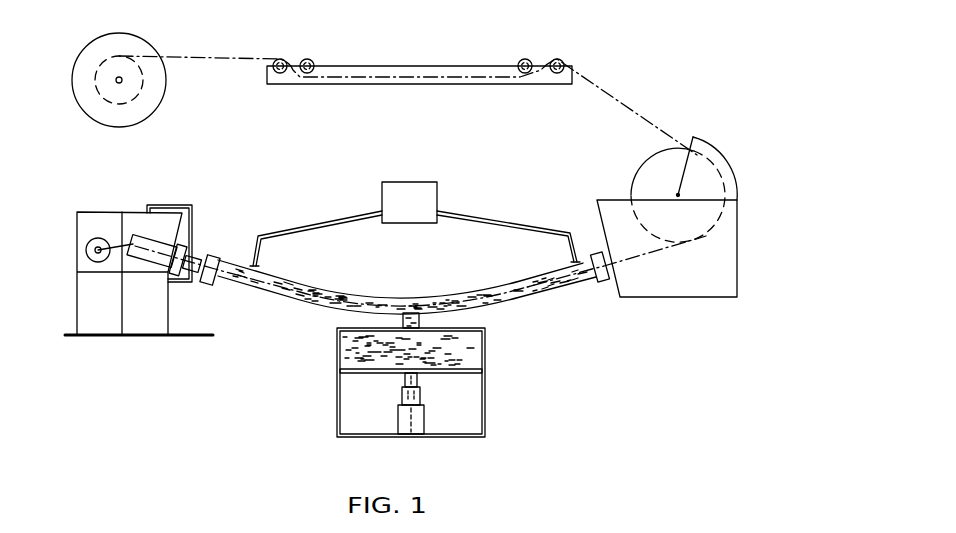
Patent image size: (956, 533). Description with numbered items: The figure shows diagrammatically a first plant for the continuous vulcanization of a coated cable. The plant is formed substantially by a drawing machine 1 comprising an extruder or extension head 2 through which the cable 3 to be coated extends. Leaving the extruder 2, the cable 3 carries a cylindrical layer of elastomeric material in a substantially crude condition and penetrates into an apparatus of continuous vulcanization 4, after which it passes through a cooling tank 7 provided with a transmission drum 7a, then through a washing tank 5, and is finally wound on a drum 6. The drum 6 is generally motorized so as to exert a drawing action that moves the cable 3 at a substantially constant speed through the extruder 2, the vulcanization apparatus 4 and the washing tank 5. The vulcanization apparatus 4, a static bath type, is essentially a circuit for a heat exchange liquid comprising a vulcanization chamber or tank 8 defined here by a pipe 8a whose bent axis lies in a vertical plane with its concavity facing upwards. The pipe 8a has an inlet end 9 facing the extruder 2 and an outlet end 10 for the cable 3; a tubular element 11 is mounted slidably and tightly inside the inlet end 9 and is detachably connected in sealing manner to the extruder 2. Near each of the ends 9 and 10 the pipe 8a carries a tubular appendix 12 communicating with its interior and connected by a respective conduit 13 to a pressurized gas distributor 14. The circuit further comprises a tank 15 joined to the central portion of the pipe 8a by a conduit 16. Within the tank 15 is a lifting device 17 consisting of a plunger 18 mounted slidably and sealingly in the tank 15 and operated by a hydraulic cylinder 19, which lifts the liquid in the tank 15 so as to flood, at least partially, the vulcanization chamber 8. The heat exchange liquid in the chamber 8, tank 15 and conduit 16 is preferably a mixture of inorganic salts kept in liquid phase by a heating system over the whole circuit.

The drawing machine 1 is at (68, 210).
The extruder 2 is at (141, 240).
The cable 3 is at (222, 57).
The apparatus of continuous vulcanization 4 is at (502, 341).
The washing tank 5 is at (410, 67).
The drum 6 is at (146, 50).
The cooling tank 7 is at (723, 257).
The transmission drum 7a is at (643, 177).
The vulcanization chamber 8 is at (306, 306).
The pipe 8a is at (403, 298).
The inlet end 9 is at (218, 255).
The outlet end 10 is at (596, 240).
The tubular element 11 is at (198, 258).
The tubular appendix 12 is at (256, 264).
The conduit 13 is at (316, 225).
The pressurized gas distributor 14 is at (411, 190).
The tank 15 is at (490, 400).
The conduit 16 is at (421, 320).
The lifting device 17 is at (388, 389).
The plunger 18 is at (452, 375).
The hydraulic cylinder 19 is at (425, 418).